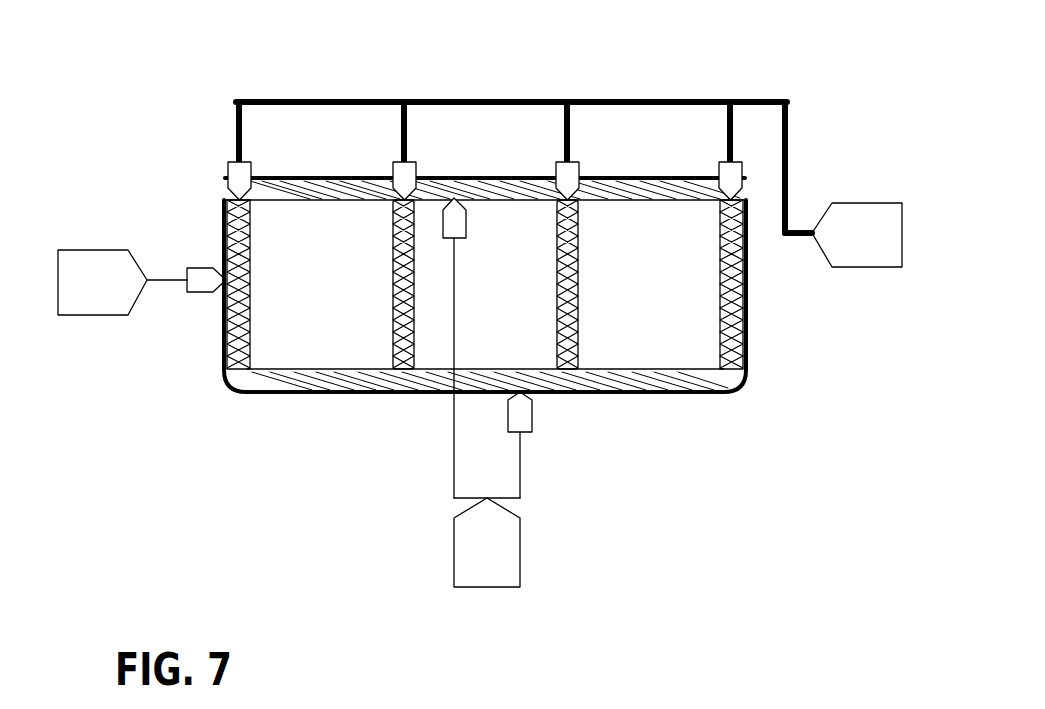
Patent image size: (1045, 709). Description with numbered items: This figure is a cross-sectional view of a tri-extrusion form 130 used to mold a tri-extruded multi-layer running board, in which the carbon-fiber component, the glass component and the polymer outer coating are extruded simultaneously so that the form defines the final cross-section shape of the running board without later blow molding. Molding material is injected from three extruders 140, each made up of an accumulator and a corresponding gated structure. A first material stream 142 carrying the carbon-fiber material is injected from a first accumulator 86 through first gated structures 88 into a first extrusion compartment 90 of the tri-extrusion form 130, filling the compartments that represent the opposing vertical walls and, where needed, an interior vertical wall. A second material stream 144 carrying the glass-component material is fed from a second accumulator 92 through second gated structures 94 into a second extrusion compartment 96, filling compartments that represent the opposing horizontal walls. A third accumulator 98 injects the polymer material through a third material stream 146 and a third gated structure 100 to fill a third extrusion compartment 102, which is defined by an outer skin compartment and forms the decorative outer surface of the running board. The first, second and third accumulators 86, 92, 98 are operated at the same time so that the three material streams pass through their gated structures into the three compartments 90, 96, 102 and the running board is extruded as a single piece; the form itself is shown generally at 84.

The reactor vessel 84 is at (212, 353).
The first accumulator 86 is at (853, 202).
The first gated structure 88 is at (392, 168).
The first extrusion compartment 90 is at (718, 305).
The second accumulator 92 is at (452, 527).
The second gated structure 94 is at (538, 415).
The second extrusion compartment 96 is at (423, 373).
The third accumulator 98 is at (118, 318).
The third gated structure 100 is at (200, 285).
The third extrusion compartment 102 is at (695, 395).
The tri-extrusion form 130 is at (288, 418).
The extruder 140 is at (548, 567).
The first material stream 142 is at (642, 99).
The second material stream 144 is at (453, 427).
The third material stream 146 is at (166, 279).